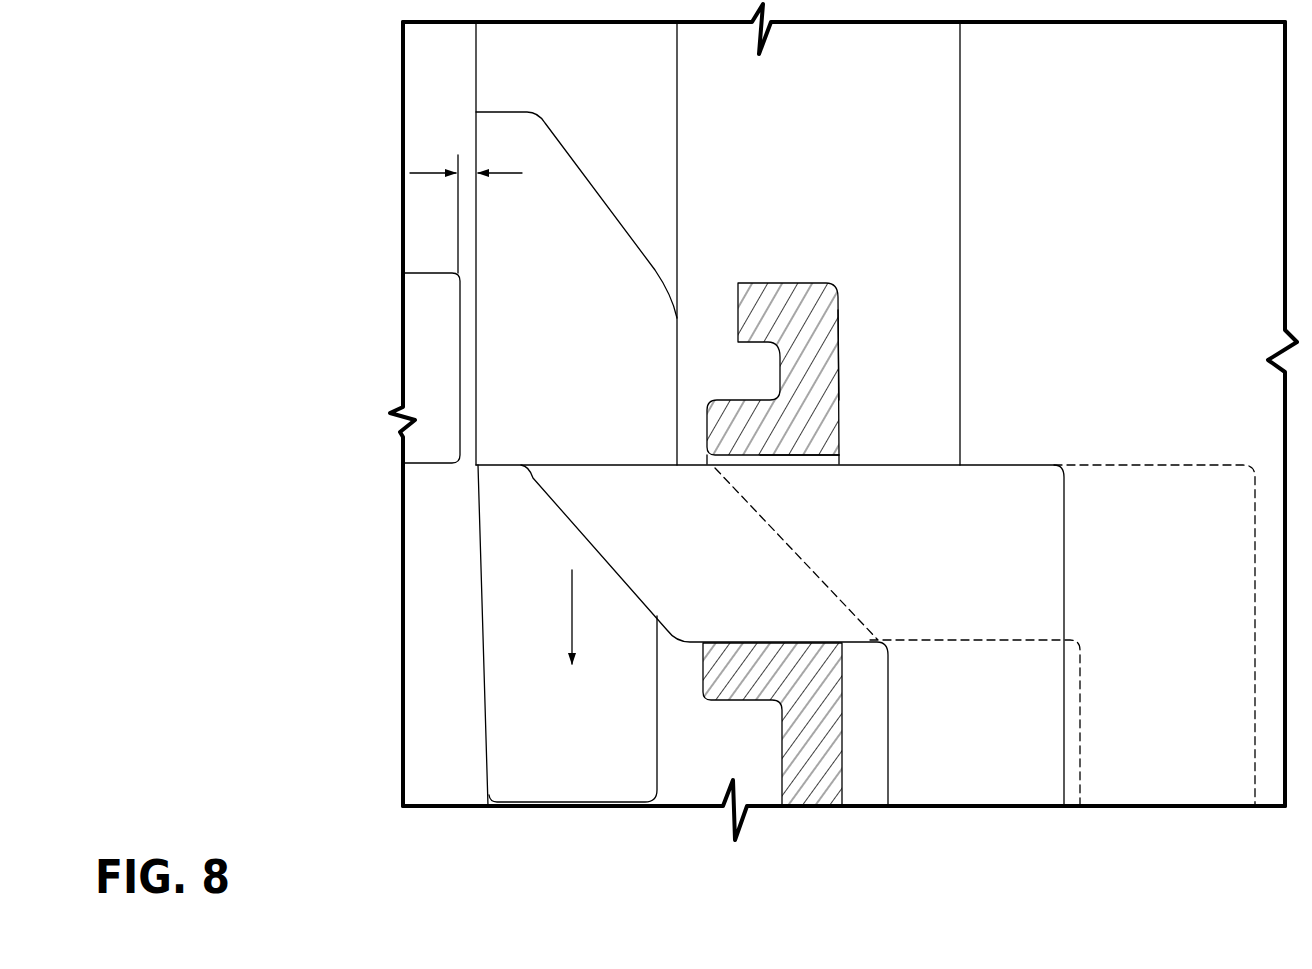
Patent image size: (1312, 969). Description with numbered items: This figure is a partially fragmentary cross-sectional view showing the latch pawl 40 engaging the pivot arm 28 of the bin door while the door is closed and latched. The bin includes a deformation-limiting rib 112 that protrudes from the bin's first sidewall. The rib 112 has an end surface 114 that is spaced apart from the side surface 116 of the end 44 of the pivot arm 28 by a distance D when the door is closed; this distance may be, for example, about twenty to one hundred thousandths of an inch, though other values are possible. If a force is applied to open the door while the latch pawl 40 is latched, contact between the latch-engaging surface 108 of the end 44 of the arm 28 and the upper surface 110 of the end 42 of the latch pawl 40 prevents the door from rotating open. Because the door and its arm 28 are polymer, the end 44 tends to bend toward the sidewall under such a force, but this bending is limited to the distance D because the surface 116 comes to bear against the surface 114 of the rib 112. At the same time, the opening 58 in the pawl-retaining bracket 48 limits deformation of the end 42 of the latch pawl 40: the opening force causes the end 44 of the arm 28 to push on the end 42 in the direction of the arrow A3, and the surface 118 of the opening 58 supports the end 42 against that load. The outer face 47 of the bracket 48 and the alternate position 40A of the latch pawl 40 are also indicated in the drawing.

The pivot arm 28 is at (684, 167).
The end of pivot arm 44 is at (623, 275).
The pawl-retaining bracket 48 is at (843, 297).
The outer face of seal ring 47 is at (839, 352).
The opening in pawl-retaining bracket 58 is at (841, 457).
The latch pawl 40 is at (997, 462).
The alternate piston position 40A is at (1134, 456).
The deformation-limiting rib 112 is at (428, 297).
The end surface of rib 114 is at (466, 288).
The side surface of pivot arm end 116 is at (474, 343).
The latch-engaging surface 108 is at (496, 466).
The upper surface of latch pawl end 110 is at (522, 467).
The end of latch pawl 42 is at (587, 505).
The surface of opening 118 is at (703, 645).
The distance D is at (448, 172).
The arrow A3 is at (554, 617).